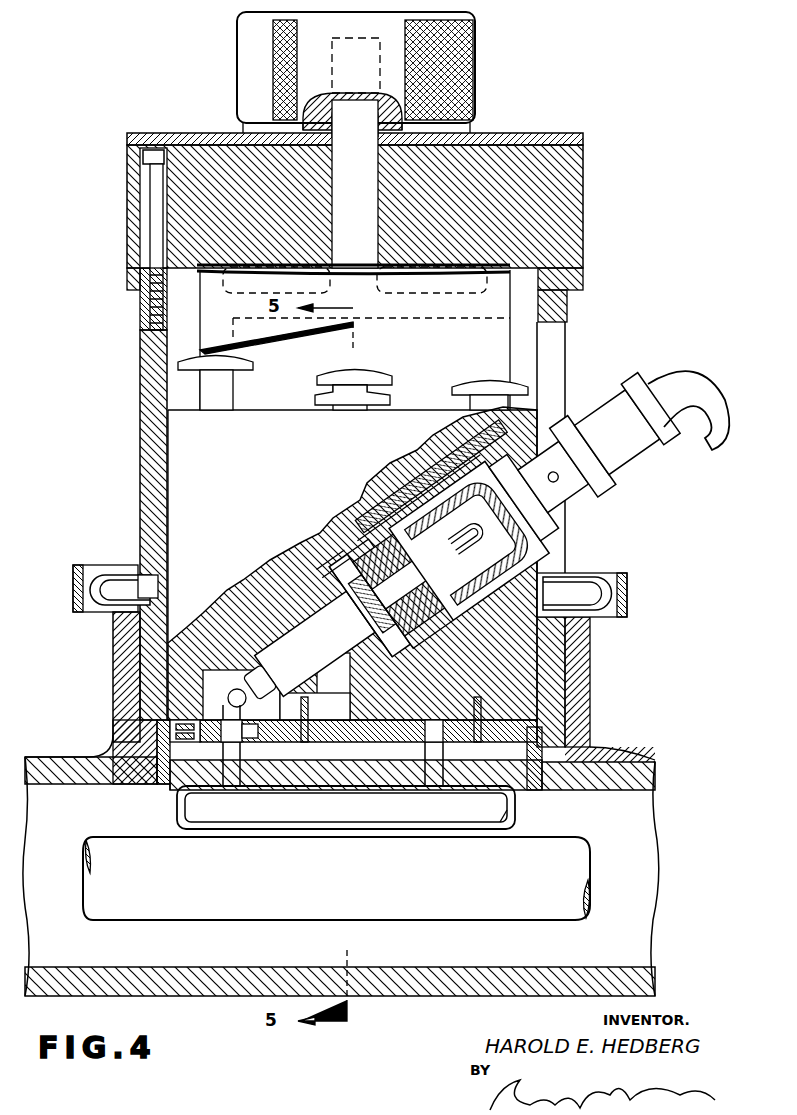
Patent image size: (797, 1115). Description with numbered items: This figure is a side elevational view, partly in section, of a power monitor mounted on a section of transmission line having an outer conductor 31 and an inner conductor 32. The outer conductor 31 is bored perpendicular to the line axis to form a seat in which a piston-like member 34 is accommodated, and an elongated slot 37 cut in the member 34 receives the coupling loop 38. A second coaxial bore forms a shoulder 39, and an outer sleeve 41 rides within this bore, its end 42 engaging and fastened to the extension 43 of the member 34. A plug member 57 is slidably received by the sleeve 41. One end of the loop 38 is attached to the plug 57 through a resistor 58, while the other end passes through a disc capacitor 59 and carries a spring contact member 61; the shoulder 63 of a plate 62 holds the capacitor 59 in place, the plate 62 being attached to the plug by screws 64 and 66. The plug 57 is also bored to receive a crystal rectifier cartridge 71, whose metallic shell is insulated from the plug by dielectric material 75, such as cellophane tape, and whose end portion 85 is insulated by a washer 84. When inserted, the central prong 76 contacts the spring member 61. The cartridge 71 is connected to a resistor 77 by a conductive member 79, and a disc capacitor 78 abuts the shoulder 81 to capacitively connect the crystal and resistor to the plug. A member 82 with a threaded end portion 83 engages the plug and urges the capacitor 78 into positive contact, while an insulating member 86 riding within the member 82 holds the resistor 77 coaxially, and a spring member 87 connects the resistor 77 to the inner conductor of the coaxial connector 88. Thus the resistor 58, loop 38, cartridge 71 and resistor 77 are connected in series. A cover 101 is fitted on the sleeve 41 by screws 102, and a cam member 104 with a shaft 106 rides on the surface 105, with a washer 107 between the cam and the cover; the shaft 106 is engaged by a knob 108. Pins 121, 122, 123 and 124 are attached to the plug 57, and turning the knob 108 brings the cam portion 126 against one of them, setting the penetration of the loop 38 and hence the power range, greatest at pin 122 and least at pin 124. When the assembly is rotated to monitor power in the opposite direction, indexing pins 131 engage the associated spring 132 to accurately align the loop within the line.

The outer conductor 31 is at (64, 760).
The inner conductor 32 is at (160, 908).
The piston-like member 34 is at (162, 792).
The elongated slot 37 is at (314, 782).
The coupling loop 38 is at (522, 810).
The shoulder 39 is at (128, 752).
The outer sleeve 41 is at (150, 425).
The sleeve end 42 is at (158, 732).
The extension 43 is at (127, 695).
The plug member 57 is at (200, 478).
The resistor 58 is at (432, 752).
The disc capacitor 59 is at (246, 740).
The spring contact member 61 is at (227, 690).
The plate 62 is at (352, 742).
The shoulder 63 is at (200, 741).
The screw 64 is at (305, 742).
The screw 66 is at (478, 742).
The crystal rectifier cartridge 71 is at (277, 590).
The dielectric material 75 is at (322, 578).
The central prong 76 is at (250, 668).
The resistor 77 is at (402, 520).
The disc capacitor 78 is at (366, 560).
The conductive member 79 is at (382, 620).
The shoulder 81 is at (398, 640).
The member 82 is at (482, 598).
The threaded end portion 83 is at (437, 628).
The washer 84 is at (345, 555).
The end portion 85 is at (356, 540).
The insulating member 86 is at (377, 540).
The spring member 87 is at (440, 466).
The coaxial connector 88 is at (622, 470).
The cover 101 is at (160, 178).
The screws 102 is at (150, 224).
The cam member 104 is at (205, 330).
The surface 105 is at (200, 280).
The shaft 106 is at (360, 214).
The washer 107 is at (195, 256).
The knob 108 is at (252, 82).
The pin 121 is at (205, 384).
The pin 122 is at (346, 370).
The pin 123 is at (492, 380).
The pin 124 is at (386, 395).
The cam portion 126 is at (283, 354).
The indexing pins 131 is at (120, 578).
The spring 132 is at (92, 614).